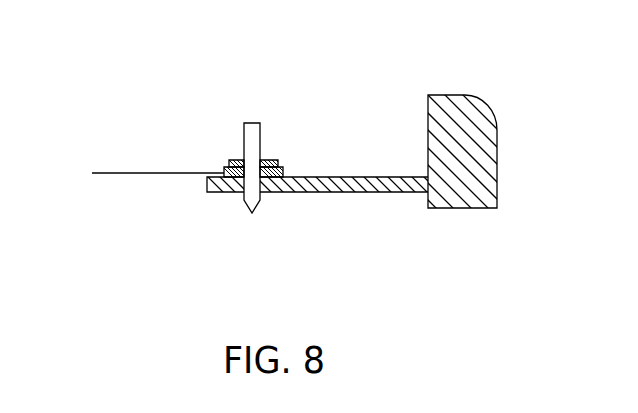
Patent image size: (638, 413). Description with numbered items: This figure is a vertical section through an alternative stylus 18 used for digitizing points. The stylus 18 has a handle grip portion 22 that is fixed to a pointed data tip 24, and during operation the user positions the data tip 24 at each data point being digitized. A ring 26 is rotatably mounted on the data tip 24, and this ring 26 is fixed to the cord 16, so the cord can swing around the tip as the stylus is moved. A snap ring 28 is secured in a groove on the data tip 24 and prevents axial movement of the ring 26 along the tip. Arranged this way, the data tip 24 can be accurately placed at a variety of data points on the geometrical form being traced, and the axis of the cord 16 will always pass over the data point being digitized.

The cord 16 is at (138, 173).
The stylus 18 is at (482, 100).
The handle grip portion 22 is at (373, 192).
The pointed data tip 24 is at (248, 200).
The ring 26 is at (280, 165).
The snap ring 28 is at (230, 163).